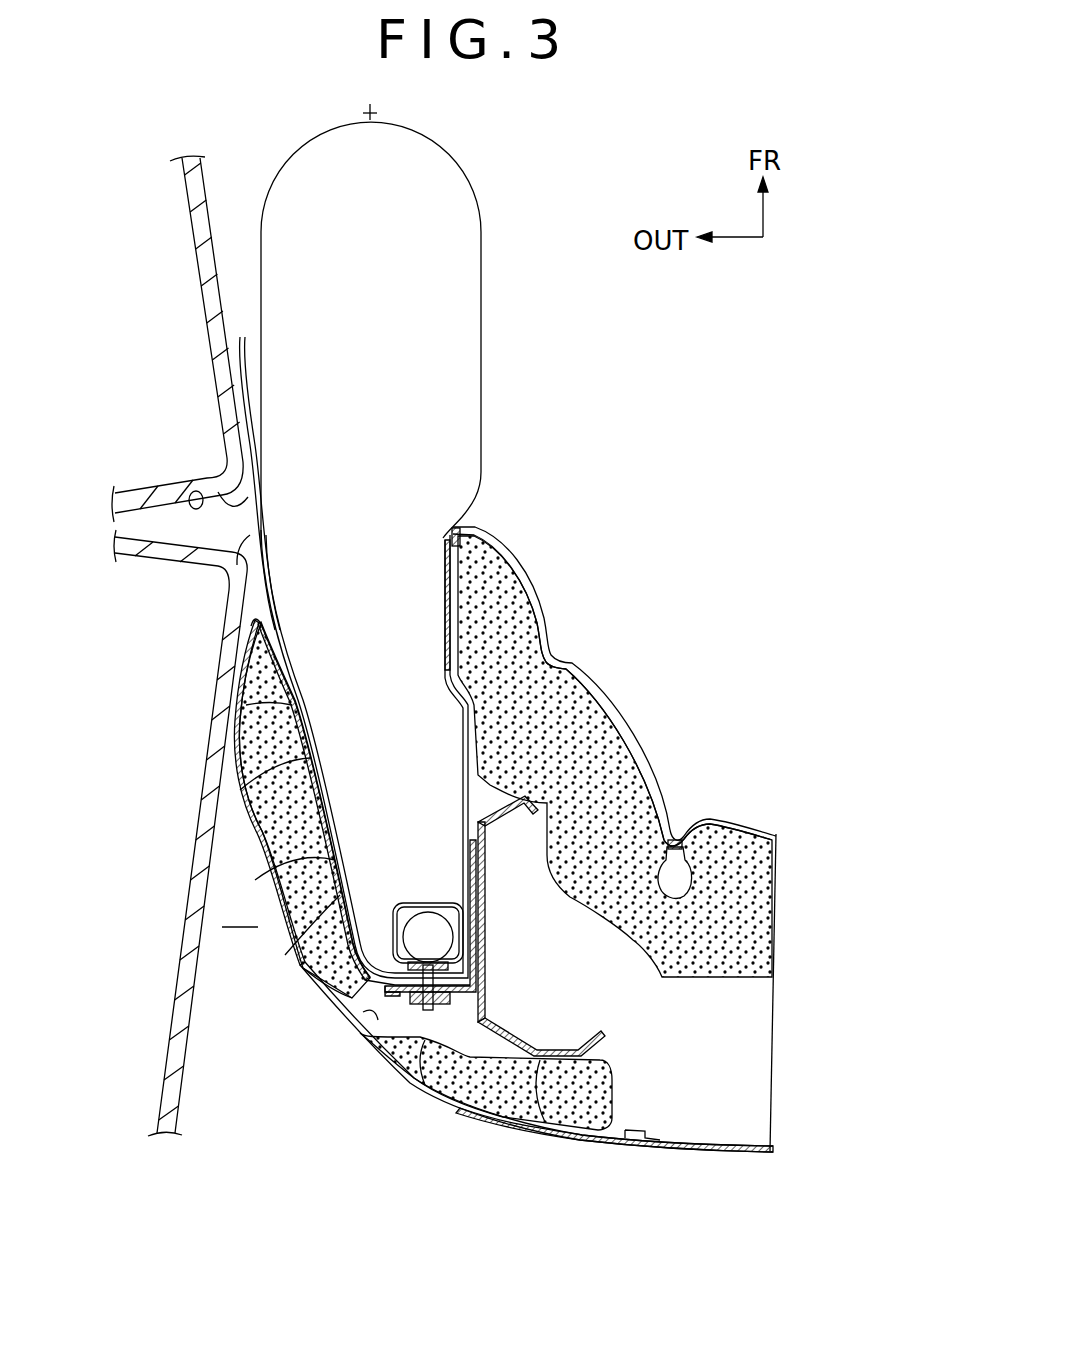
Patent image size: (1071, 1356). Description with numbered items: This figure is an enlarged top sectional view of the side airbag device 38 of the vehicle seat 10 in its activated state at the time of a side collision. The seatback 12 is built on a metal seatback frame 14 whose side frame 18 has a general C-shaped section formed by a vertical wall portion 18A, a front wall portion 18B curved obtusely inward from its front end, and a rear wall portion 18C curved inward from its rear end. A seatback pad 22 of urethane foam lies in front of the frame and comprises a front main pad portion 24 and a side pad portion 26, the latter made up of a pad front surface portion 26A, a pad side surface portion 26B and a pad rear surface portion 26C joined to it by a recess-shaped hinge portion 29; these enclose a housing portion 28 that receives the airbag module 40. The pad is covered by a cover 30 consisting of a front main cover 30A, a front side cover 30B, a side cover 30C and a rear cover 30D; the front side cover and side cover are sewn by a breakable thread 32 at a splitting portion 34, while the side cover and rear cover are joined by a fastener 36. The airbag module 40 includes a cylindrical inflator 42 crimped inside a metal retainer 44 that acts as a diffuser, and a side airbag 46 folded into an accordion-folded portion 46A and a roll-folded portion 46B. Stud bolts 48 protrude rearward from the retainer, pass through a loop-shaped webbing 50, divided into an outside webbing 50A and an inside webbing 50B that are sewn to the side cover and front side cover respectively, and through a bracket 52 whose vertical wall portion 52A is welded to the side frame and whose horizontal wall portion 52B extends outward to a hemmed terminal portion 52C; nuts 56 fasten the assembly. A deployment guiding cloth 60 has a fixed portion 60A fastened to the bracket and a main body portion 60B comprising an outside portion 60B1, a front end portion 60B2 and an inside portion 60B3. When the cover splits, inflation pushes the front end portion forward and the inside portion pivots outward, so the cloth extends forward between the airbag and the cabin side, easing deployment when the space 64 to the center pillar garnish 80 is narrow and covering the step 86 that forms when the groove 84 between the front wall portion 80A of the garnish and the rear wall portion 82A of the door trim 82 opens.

The vehicle seat 10 is at (755, 1010).
The seatback 12 is at (755, 1010).
The seatback frame 14 is at (587, 996).
The side frame 18 is at (587, 996).
The vertical wall portion 18A is at (487, 900).
The front wall portion 18B is at (513, 818).
The rear wall portion 18C is at (560, 1050).
The seatback pad 22 is at (797, 955).
The front main pad portion 24 is at (773, 830).
The side pad portion 26 is at (422, 881).
The pad front surface portion 26A is at (555, 685).
The pad side surface portion 26B is at (267, 788).
The pad rear surface portion 26C is at (590, 1112).
The housing portion 28 is at (468, 683).
The hinge portion 29 is at (377, 1018).
The cover 30 is at (445, 874).
The front main cover 30A is at (723, 816).
The front side cover 30B is at (620, 722).
The side cover 30C is at (240, 840).
The rear cover 30D is at (637, 1147).
The thread 32 is at (470, 530).
The splitting portion 34 is at (452, 540).
The fastener 36 is at (643, 1132).
The side airbag device 38 is at (352, 640).
The airbag module 40 is at (362, 983).
The inflator 42 is at (427, 912).
The retainer 44 is at (400, 902).
The side airbag 46 is at (348, 541).
The accordion-folded portion 46A is at (332, 712).
The roll-folded portion 46B is at (483, 180).
The stud bolt 48 is at (428, 1012).
The webbing 50 is at (445, 874).
The outside webbing 50A is at (296, 950).
The inside webbing 50B is at (604, 683).
The bracket 52 is at (451, 991).
The vertical wall portion 52A is at (485, 964).
The horizontal wall portion 52B is at (480, 1000).
The terminal portion 52C is at (396, 1006).
The nut 56 is at (416, 1006).
The deployment guiding cloth 60 is at (293, 754).
The fixed portion 60A is at (460, 988).
The main body portion 60B is at (281, 667).
The outside portion 60B1 is at (283, 746).
The front end portion 60B2 is at (262, 648).
The inside portion 60B3 is at (248, 410).
The space 64 is at (240, 911).
The center pillar garnish 80 is at (179, 833).
The front wall portion 80A is at (137, 547).
The door trim 82 is at (190, 337).
The rear wall portion 82A is at (161, 466).
The groove 84 is at (200, 490).
The step 86 is at (258, 512).